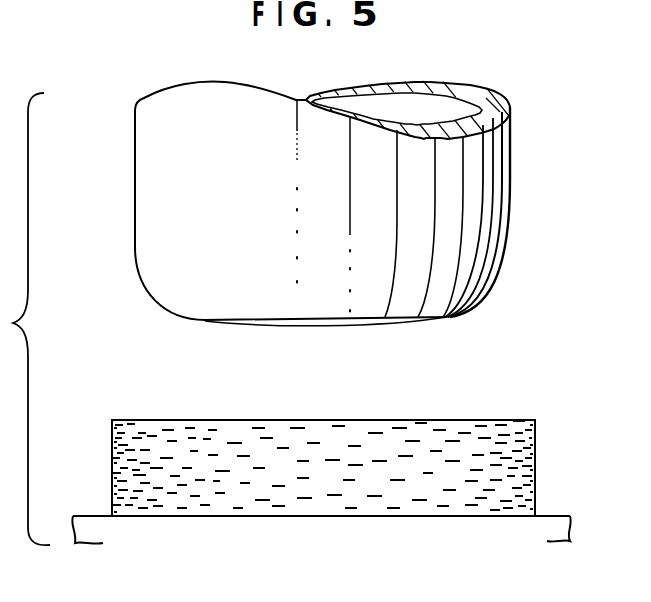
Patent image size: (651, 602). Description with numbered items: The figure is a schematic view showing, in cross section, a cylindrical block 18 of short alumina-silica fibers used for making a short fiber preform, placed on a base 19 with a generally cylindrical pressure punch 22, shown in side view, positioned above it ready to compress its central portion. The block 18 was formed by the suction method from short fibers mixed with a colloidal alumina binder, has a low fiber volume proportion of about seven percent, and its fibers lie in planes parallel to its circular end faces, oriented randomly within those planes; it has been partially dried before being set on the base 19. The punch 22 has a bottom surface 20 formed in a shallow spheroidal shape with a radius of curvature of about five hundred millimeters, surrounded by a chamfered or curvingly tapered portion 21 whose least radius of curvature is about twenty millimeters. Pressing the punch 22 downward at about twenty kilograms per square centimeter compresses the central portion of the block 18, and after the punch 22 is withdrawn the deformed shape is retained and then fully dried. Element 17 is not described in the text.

The fiber mat layer 17 is at (150, 420).
The block of alumina-silica fibers 18 is at (485, 418).
The base 19 is at (556, 514).
The bottom surface 20 is at (375, 327).
The chamfered or curvingly tapered portion 21 is at (497, 286).
The pressure punch 22 is at (511, 199).